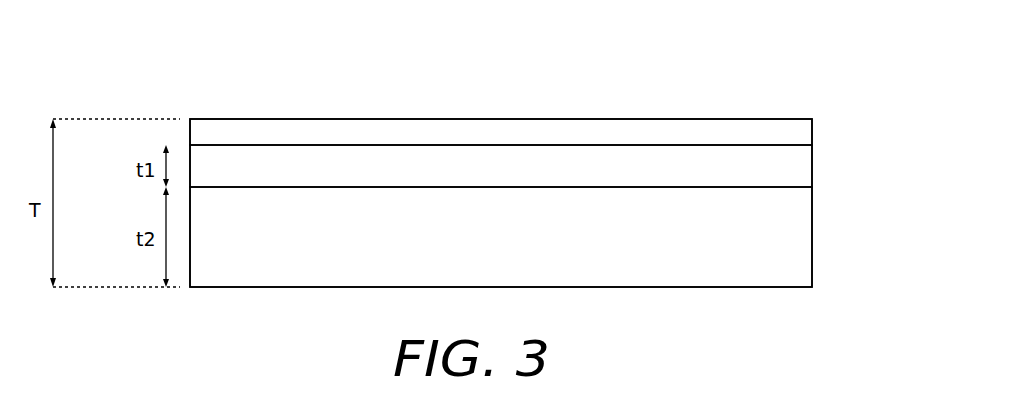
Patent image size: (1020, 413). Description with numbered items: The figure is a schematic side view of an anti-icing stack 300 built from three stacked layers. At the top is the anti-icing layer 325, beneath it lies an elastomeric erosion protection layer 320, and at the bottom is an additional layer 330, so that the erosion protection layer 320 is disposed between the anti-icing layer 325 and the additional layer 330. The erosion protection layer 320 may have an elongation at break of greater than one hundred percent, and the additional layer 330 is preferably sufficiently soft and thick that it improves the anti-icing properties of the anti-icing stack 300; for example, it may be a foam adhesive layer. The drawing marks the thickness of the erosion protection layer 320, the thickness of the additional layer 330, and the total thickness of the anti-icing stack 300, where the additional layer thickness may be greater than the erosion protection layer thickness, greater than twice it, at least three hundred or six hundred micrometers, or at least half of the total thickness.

The anti-icing stack 300 is at (186, 61).
The anti-icing layer 325 is at (779, 127).
The elastomeric erosion protection layer 320 is at (792, 168).
The additional layer 330 is at (792, 229).